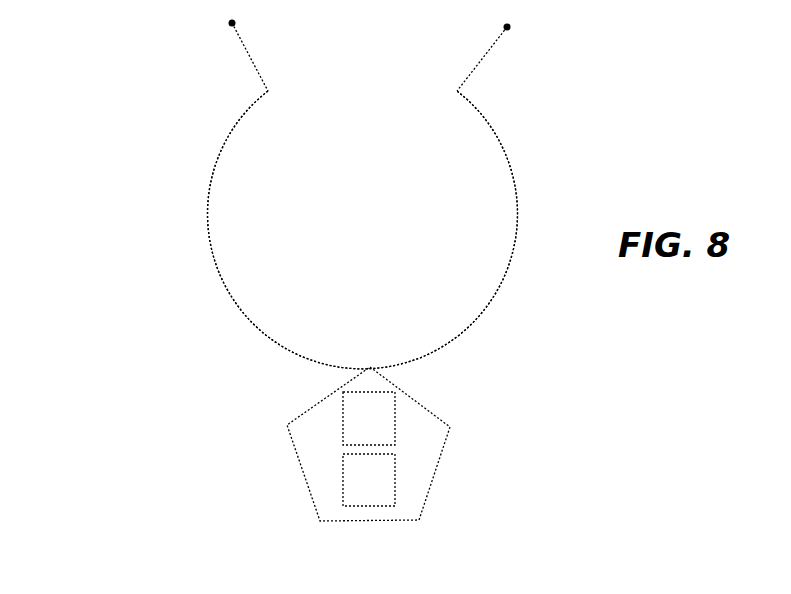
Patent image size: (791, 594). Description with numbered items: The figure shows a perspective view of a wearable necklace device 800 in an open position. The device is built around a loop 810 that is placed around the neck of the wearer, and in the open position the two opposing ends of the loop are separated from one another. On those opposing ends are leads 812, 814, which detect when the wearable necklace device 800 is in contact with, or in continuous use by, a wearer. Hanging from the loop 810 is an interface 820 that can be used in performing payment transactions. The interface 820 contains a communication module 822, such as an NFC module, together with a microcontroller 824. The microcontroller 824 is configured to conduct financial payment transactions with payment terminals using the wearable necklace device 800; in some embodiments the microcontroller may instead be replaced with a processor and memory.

The wearable necklace device 800 is at (114, 208).
The loop 810 is at (213, 274).
The lead 812 is at (226, 33).
The lead 814 is at (519, 39).
The interface 820 is at (298, 464).
The communication module 822 is at (369, 418).
The microcontroller 824 is at (369, 480).